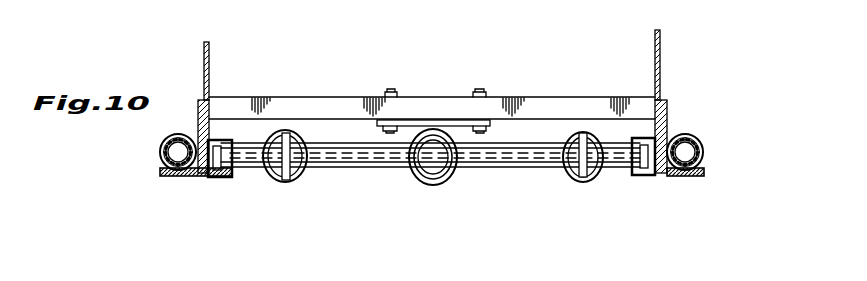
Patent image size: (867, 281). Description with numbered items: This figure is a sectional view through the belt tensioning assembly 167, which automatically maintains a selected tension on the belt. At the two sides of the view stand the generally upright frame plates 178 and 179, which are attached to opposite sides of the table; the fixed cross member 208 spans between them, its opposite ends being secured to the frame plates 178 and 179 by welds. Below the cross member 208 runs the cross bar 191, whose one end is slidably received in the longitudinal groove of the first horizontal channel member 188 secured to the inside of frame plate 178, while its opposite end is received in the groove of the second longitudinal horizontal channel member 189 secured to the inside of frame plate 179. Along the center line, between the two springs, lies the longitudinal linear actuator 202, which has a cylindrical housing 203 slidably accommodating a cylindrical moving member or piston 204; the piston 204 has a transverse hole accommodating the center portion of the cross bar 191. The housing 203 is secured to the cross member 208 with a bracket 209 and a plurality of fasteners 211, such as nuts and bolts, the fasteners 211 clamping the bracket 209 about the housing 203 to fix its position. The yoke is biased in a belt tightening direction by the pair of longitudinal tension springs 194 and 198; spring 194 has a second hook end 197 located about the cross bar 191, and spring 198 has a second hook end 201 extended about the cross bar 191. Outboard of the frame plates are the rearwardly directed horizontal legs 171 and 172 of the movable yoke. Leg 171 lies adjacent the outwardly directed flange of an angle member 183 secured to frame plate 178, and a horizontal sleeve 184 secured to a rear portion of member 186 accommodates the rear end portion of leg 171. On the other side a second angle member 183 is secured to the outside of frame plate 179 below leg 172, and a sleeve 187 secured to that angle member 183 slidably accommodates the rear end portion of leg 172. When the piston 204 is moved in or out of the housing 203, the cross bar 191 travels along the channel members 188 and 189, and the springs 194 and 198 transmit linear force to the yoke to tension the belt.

The belt tensioning assembly 167 is at (420, 226).
The leg 171 is at (700, 150).
The leg 172 is at (160, 150).
The frame plate 178 is at (662, 53).
The frame plate 179 is at (210, 61).
The angle member 183 is at (185, 177).
The horizontal sleeve 184 is at (695, 140).
The member 186 is at (698, 177).
The sleeve 187 is at (177, 133).
The first horizontal channel member 188 is at (642, 177).
The second longitudinal horizontal channel member 189 is at (212, 178).
The cross bar 191 is at (352, 160).
The tension spring 194 is at (568, 176).
The second hook end 197 is at (597, 170).
The tension spring 198 is at (300, 180).
The second hook end 201 is at (292, 143).
The longitudinal linear actuator 202 is at (414, 183).
The cylindrical housing 203 is at (440, 185).
The piston 204 is at (456, 172).
The fixed cross member 208 is at (316, 100).
The bracket 209 is at (415, 120).
The fasteners 211 is at (390, 89).